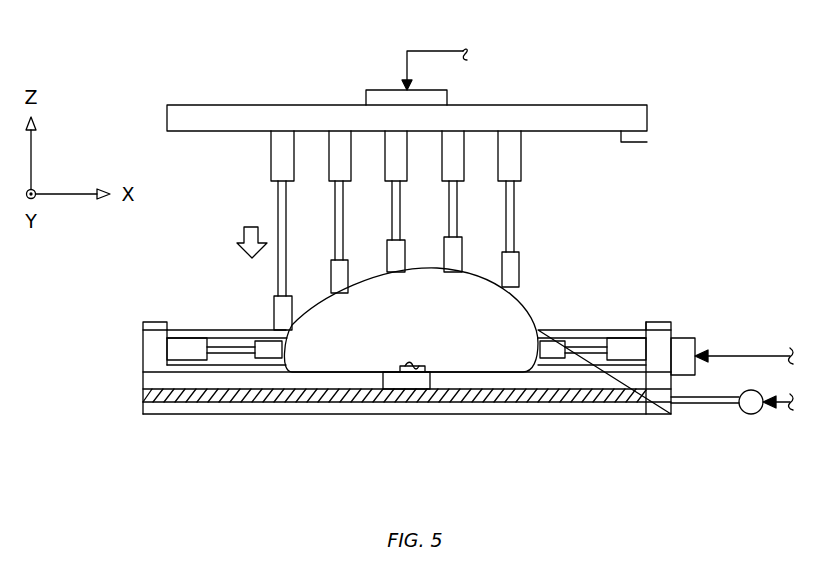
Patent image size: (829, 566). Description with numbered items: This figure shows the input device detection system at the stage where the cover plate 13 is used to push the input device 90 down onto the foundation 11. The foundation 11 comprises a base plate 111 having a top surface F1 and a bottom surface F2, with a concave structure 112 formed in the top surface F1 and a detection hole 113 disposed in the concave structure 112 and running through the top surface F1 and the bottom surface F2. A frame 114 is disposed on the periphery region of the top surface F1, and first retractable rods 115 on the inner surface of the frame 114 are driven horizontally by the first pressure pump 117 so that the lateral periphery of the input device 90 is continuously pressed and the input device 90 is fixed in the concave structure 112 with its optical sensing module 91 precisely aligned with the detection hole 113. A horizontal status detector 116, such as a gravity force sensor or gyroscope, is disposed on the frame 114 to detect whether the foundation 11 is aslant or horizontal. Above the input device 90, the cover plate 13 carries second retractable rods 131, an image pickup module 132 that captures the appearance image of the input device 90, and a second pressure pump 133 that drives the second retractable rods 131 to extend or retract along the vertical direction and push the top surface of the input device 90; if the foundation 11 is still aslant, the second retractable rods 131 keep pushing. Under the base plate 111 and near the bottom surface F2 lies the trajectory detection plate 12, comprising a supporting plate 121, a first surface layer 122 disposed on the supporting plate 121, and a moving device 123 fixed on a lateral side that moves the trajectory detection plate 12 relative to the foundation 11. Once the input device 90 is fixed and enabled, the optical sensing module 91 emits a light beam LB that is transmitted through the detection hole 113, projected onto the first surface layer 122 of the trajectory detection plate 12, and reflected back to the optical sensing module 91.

The cover plate 13 is at (540, 105).
The second retractable rods 131 is at (271, 148).
The image pickup module 132 is at (634, 150).
The second pressure pump 133 is at (382, 88).
The foundation 11 is at (143, 345).
The base plate 111 is at (175, 386).
The concave structure 112 is at (525, 378).
The detection hole 113 is at (393, 382).
The frame 114 is at (662, 338).
The first retractable rods 115 is at (190, 348).
The horizontal status detector 116 is at (155, 322).
The first pressure pump 117 is at (692, 347).
The trajectory detection plate 12 is at (383, 435).
The supporting plate 121 is at (247, 410).
The first surface layer 122 is at (177, 402).
The moving device 123 is at (750, 412).
The input device 90 is at (528, 312).
The optical sensing module 91 is at (420, 366).
The light beam LB is at (410, 368).
The top surface F1 is at (588, 368).
The bottom surface F2 is at (638, 392).